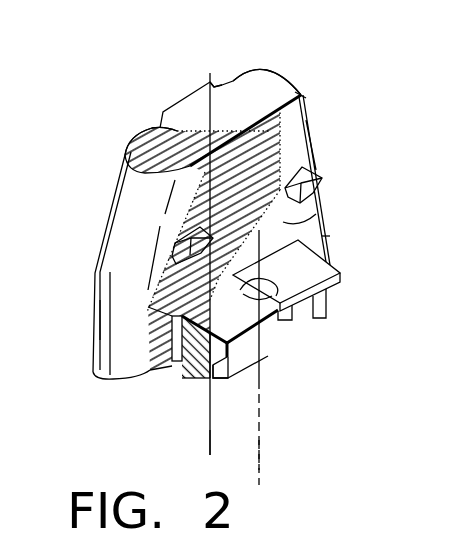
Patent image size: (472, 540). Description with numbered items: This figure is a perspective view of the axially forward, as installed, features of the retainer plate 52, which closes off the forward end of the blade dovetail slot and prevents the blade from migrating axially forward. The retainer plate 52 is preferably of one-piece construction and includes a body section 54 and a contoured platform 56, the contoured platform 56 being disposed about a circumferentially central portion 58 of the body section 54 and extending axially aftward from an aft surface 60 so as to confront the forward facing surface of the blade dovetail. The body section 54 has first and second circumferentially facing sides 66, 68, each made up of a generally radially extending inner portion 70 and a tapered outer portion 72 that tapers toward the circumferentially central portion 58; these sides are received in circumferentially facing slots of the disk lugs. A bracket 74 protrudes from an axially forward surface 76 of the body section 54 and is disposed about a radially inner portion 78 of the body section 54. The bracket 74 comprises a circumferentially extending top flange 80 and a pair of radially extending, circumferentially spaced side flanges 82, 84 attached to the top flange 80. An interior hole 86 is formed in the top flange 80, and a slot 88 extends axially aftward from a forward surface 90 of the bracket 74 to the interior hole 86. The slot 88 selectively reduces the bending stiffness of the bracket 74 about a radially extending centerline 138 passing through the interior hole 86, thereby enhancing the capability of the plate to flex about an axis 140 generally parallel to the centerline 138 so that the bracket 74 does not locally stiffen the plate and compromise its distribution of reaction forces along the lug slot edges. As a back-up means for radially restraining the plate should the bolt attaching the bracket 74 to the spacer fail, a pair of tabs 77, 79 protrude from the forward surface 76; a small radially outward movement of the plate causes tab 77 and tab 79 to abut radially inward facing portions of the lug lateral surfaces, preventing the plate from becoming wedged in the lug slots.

The retainer plate 52 is at (117, 56).
The body section 54 is at (316, 74).
The contoured platform 56 is at (183, 112).
The circumferentially central portion 58 is at (237, 78).
The aft surface 60 is at (143, 135).
The first circumferentially facing side 66 is at (93, 272).
The second circumferentially facing side 68 is at (323, 186).
The inner portion 70 is at (100, 316).
The tapered outer portion 72 is at (123, 205).
The bracket 74 is at (185, 378).
The axially forward surface 76 is at (286, 223).
The tab 77 is at (180, 237).
The radially inner portion 78 is at (150, 383).
The tab 79 is at (322, 158).
The top flange 80 is at (331, 268).
The side flange 82 is at (224, 378).
The side flange 84 is at (335, 308).
The interior hole 86 is at (260, 286).
The slot 88 is at (284, 323).
The forward surface 90 is at (245, 337).
The centerline 138 is at (260, 447).
The axis 140 is at (208, 437).